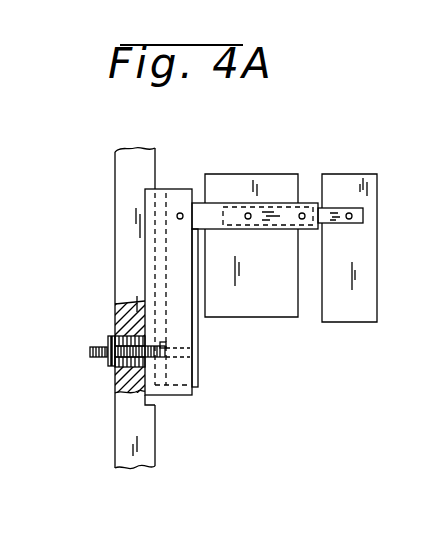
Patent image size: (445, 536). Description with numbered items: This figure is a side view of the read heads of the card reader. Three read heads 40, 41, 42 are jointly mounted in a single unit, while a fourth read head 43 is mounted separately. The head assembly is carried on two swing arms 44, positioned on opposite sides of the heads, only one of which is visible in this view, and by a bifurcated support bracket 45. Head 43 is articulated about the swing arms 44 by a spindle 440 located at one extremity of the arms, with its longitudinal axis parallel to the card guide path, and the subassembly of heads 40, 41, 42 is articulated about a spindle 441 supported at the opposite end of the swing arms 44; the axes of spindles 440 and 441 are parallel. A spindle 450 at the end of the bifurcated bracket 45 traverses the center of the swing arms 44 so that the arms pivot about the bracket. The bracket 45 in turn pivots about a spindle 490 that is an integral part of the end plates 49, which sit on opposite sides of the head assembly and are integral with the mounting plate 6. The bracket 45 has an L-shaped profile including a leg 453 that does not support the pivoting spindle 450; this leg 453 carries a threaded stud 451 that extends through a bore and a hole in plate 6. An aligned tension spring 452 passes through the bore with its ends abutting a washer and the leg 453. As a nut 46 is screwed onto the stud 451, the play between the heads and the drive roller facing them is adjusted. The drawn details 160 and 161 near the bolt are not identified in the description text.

The mounting plate 6 is at (123, 170).
The read head 40 is at (255, 168).
The read head 41 is at (255, 216).
The read head 42 is at (255, 216).
The read head 43 is at (377, 174).
The swing arm 44 is at (363, 213).
The bifurcated support bracket 45 is at (217, 212).
The nut 46 is at (107, 363).
The end plate 49 is at (160, 199).
The washer 160 is at (112, 367).
The post cross-section 161 is at (126, 320).
The spindle 440 is at (351, 221).
The spindle 441 is at (252, 213).
The spindle 450 is at (304, 213).
The threaded stud 451 is at (92, 350).
The tension spring 452 is at (143, 368).
The leg 453 is at (198, 333).
The spindle 490 is at (180, 213).